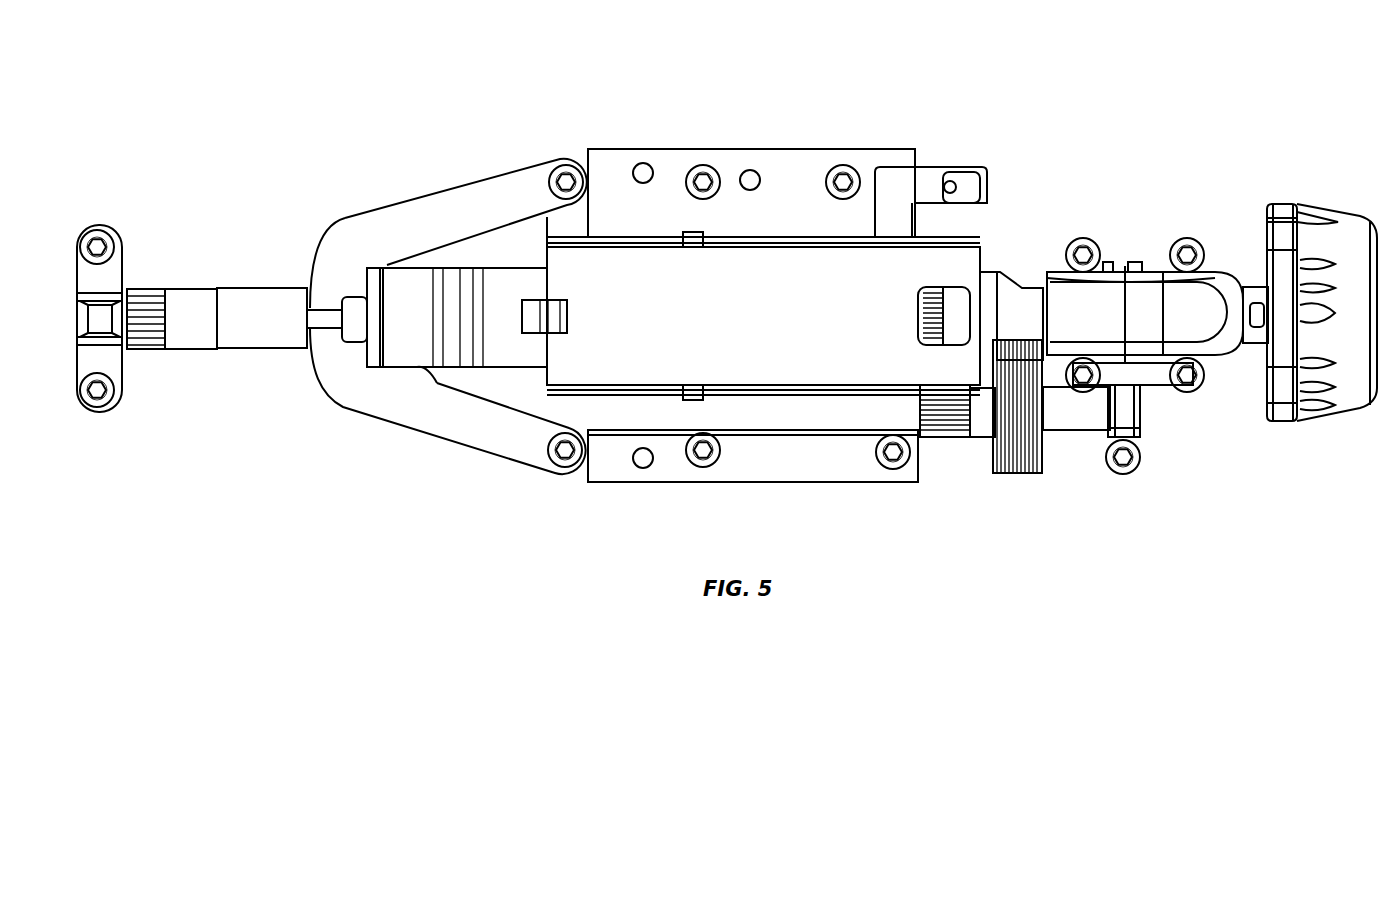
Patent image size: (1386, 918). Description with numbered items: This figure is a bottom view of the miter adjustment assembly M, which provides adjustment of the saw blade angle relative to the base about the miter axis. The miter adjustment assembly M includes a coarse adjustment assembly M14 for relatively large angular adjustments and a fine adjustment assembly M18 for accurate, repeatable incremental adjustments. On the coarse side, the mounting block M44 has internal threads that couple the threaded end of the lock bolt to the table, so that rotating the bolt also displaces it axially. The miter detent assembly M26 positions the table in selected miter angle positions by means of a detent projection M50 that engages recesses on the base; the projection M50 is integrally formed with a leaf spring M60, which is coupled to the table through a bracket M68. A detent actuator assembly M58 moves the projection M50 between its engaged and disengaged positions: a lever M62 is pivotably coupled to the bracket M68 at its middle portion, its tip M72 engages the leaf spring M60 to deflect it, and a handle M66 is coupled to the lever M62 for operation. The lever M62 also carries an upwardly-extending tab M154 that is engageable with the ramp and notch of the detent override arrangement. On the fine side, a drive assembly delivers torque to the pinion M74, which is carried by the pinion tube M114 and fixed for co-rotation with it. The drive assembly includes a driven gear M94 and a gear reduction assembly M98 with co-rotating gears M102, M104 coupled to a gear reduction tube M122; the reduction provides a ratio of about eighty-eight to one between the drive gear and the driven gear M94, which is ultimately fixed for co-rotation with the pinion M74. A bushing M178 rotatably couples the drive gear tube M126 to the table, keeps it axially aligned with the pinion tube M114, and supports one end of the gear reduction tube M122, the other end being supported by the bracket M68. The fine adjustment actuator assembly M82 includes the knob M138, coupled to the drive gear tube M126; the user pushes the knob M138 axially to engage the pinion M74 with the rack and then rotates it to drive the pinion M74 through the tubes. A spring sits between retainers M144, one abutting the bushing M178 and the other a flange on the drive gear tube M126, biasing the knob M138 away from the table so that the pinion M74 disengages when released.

The miter adjustment assembly M is at (1120, 52).
The coarse adjustment assembly M14 is at (607, 400).
The fine adjustment assembly M18 is at (1003, 486).
The miter detent assembly M26 is at (352, 442).
The mounting block M44 is at (105, 278).
The detent projection M50 is at (328, 318).
The detent actuator assembly M58 is at (1020, 248).
The leaf spring M60 is at (433, 192).
The lever M62 is at (647, 262).
The handle M66 is at (1232, 268).
The bracket M68 is at (773, 165).
The tip of the lever M72 is at (437, 385).
The pinion M74 is at (175, 350).
The fine adjustment actuator assembly M82 is at (1326, 297).
The driven gear M94 is at (950, 303).
The gear reduction assembly M98 is at (960, 470).
The co-rotating gear M102 is at (1022, 482).
The co-rotating gear M104 is at (940, 447).
The pinion tube M114 is at (280, 293).
The gear reduction tube M122 is at (1085, 412).
The drive gear tube M126 is at (1245, 350).
The knob M138 is at (1317, 420).
The retainer M144 is at (1106, 262).
The upwardly-extending tab M154 is at (527, 313).
The bushing M178 is at (1143, 415).